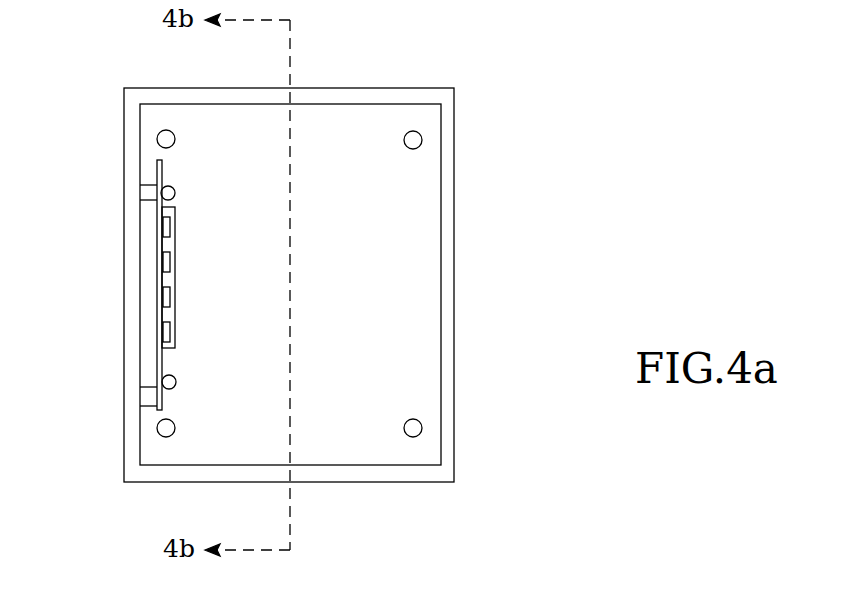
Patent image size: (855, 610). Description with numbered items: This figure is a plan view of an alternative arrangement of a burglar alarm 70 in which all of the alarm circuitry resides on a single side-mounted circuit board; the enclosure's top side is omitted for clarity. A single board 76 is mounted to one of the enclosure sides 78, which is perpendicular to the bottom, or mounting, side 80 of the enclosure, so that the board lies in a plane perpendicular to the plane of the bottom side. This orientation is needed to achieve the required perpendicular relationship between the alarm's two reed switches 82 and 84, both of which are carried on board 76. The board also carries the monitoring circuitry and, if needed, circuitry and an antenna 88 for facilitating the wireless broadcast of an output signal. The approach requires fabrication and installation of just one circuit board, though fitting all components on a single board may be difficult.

The burglar alarm 70 is at (506, 490).
The circuit board 76 is at (163, 160).
The side of the enclosure 78 is at (123, 255).
The bottom mounting side 80 is at (385, 188).
The reed switch 82 is at (165, 381).
The reed switch 84 is at (177, 323).
The antenna 88 is at (165, 197).